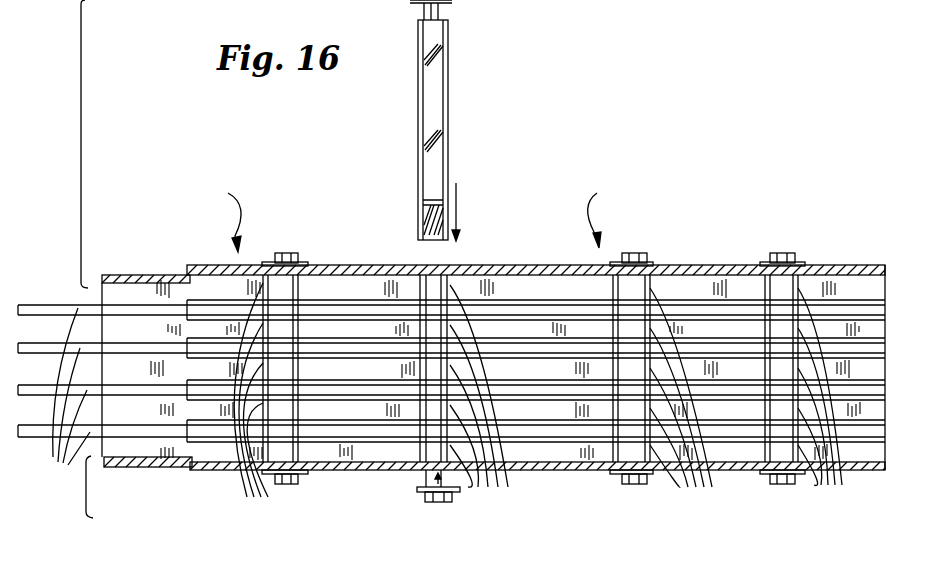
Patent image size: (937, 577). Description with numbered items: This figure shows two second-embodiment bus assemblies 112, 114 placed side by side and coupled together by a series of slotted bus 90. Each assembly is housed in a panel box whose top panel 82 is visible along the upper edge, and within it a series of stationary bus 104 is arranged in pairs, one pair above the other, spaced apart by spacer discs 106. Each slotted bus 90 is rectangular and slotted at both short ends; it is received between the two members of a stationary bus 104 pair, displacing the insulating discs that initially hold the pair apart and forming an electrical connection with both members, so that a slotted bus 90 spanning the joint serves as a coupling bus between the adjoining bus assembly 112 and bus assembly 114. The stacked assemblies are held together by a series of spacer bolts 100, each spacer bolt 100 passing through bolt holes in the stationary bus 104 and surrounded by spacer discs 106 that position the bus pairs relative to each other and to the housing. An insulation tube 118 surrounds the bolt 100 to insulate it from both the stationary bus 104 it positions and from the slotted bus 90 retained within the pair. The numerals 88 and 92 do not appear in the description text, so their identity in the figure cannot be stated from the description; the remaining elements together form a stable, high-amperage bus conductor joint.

The top panel 82 is at (325, 266).
The nut 88 is at (296, 485).
The slotted bus 90 is at (451, 391).
The channel member 92 is at (140, 275).
The spacer bolt 100 is at (440, 8).
The stationary bus 104 is at (188, 340).
The spacer discs 106 is at (545, 400).
The bus assembly 112 is at (219, 219).
The bus assembly 114 is at (610, 217).
The insulation tube 118 is at (445, 55).